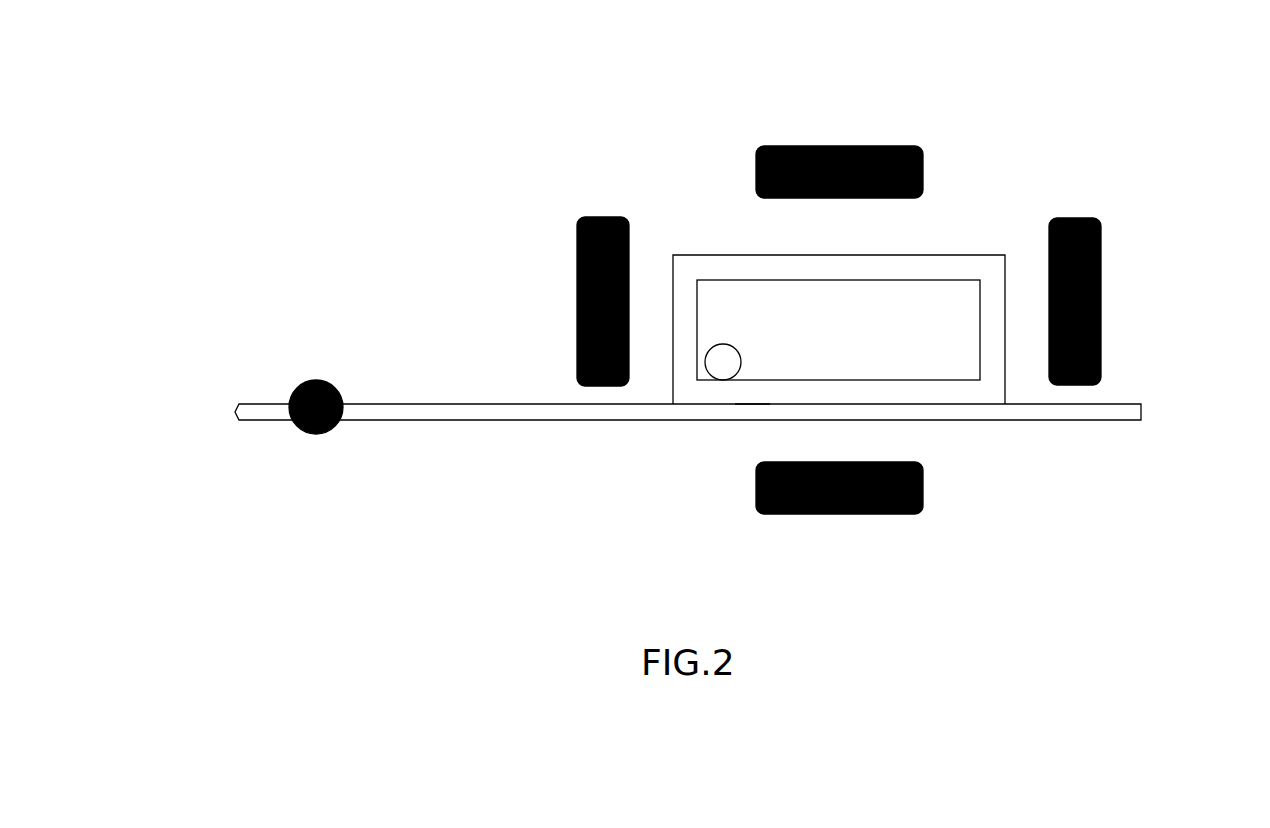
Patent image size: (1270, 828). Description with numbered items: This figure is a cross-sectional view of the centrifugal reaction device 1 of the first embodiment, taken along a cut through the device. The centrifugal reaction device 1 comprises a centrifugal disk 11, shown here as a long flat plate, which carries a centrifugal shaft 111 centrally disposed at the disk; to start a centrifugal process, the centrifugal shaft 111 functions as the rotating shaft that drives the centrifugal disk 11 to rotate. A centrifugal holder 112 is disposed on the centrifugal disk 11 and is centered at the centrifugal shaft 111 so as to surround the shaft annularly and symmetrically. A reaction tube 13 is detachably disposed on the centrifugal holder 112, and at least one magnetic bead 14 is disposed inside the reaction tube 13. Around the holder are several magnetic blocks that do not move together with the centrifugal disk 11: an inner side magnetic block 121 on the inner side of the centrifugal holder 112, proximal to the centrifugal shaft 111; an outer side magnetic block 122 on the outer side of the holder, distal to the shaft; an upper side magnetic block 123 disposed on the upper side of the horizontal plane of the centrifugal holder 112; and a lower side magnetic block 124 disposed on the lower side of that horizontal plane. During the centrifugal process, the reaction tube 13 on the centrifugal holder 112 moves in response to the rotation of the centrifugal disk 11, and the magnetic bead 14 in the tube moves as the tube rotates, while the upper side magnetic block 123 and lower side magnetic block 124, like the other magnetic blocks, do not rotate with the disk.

The centrifugal reaction device 1 is at (318, 135).
The centrifugal disk 11 is at (432, 403).
The centrifugal shaft 111 is at (298, 387).
The centrifugal holder 112 is at (752, 405).
The inner side magnetic block 121 is at (598, 216).
The outer side magnetic block 122 is at (1102, 254).
The upper side magnetic block 123 is at (830, 146).
The lower side magnetic block 124 is at (925, 488).
The reaction tube 13 is at (698, 343).
The magnetic bead 14 is at (721, 365).